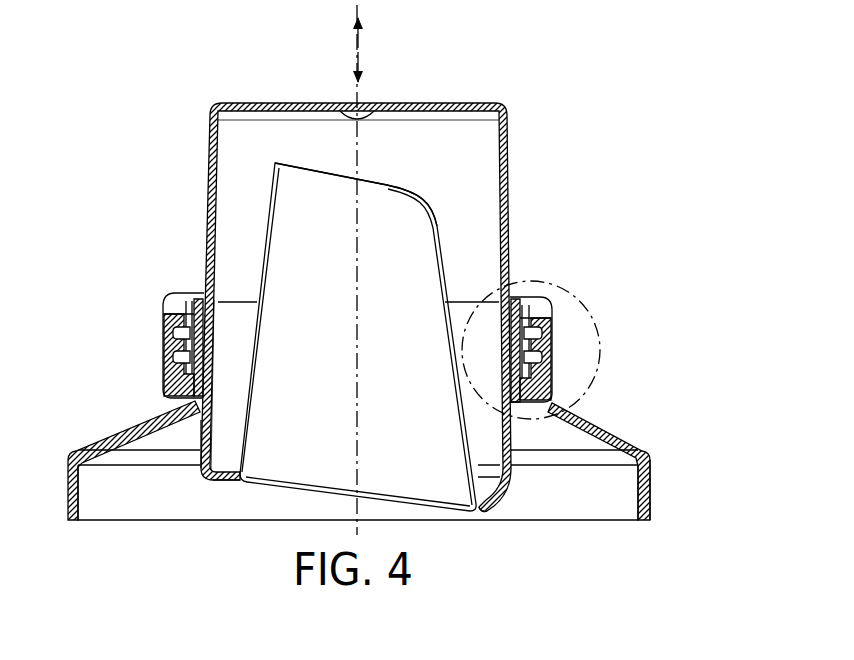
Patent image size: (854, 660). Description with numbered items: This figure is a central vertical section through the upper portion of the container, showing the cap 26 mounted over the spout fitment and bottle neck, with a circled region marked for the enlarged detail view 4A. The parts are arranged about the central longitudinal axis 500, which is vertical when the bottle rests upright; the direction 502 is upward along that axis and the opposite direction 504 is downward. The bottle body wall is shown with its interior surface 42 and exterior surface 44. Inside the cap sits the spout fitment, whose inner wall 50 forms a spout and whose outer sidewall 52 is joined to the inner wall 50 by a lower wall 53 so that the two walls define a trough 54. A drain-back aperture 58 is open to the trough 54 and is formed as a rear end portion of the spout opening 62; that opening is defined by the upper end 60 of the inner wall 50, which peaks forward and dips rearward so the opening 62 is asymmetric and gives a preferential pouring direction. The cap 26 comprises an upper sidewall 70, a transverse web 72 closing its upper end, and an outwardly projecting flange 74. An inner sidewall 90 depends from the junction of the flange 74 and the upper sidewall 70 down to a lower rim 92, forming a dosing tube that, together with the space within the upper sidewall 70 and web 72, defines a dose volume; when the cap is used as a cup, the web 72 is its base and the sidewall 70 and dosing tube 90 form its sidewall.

The cap 26 is at (178, 201).
The interior surface 42 is at (641, 520).
The exterior surface 44 is at (650, 488).
The inner wall 50 is at (256, 385).
The outer sidewall 52 is at (196, 432).
The lower wall 53 is at (222, 484).
The trough 54 is at (226, 423).
The drain-back aperture 58 is at (486, 513).
The upper end 60 is at (384, 184).
The spout opening 62 is at (374, 163).
The upper sidewall 70 is at (507, 156).
The transverse web 72 is at (276, 103).
The outwardly projecting flange 74 is at (536, 286).
The inner sidewall 90 is at (213, 325).
The lower rim 92 is at (516, 479).
The central longitudinal axis 500 is at (358, 413).
The upward direction 502 is at (358, 32).
The downward direction 504 is at (358, 50).
The detail view circle 4A is at (600, 350).